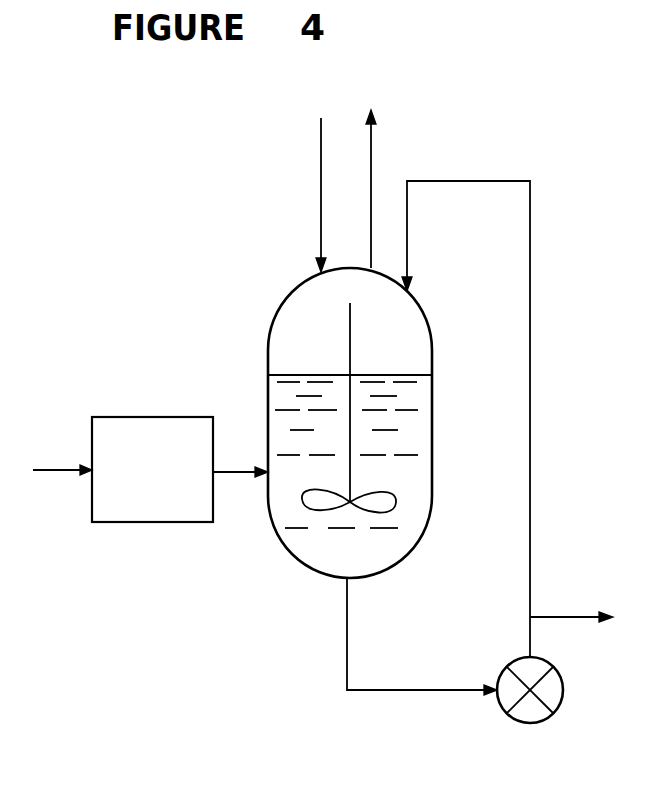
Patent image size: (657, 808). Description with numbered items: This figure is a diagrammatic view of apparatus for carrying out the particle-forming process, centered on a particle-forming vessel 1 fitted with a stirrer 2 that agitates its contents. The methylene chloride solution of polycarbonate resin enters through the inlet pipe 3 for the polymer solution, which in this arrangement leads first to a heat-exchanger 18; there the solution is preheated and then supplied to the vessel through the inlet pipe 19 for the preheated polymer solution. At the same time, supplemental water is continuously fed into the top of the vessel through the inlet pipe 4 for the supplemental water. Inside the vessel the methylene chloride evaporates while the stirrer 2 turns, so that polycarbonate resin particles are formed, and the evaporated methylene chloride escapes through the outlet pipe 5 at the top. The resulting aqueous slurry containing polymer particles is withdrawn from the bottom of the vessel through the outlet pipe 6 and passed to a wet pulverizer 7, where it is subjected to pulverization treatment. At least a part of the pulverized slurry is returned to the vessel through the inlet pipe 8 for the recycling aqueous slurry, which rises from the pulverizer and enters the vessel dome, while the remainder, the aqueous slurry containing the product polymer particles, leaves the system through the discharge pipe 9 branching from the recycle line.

The particle-forming vessel 1 is at (274, 531).
The stirrer 2 is at (313, 505).
The inlet pipe for the polymer solution 3 is at (56, 470).
The inlet pipe for the supplemental water 4 is at (321, 195).
The outlet pipe for the evaporated methylene chloride 5 is at (372, 168).
The outlet pipe for the aqueous slurry 6 is at (411, 691).
The wet pulverizer 7 is at (516, 723).
The inlet pipe for the recycling aqueous slurry 8 is at (532, 348).
The discharge pipe for the aqueous slurry containing product polymer particles 9 is at (553, 617).
The heat-exchanger 18 is at (155, 522).
The inlet pipe for the preheated polymer solution 19 is at (228, 473).